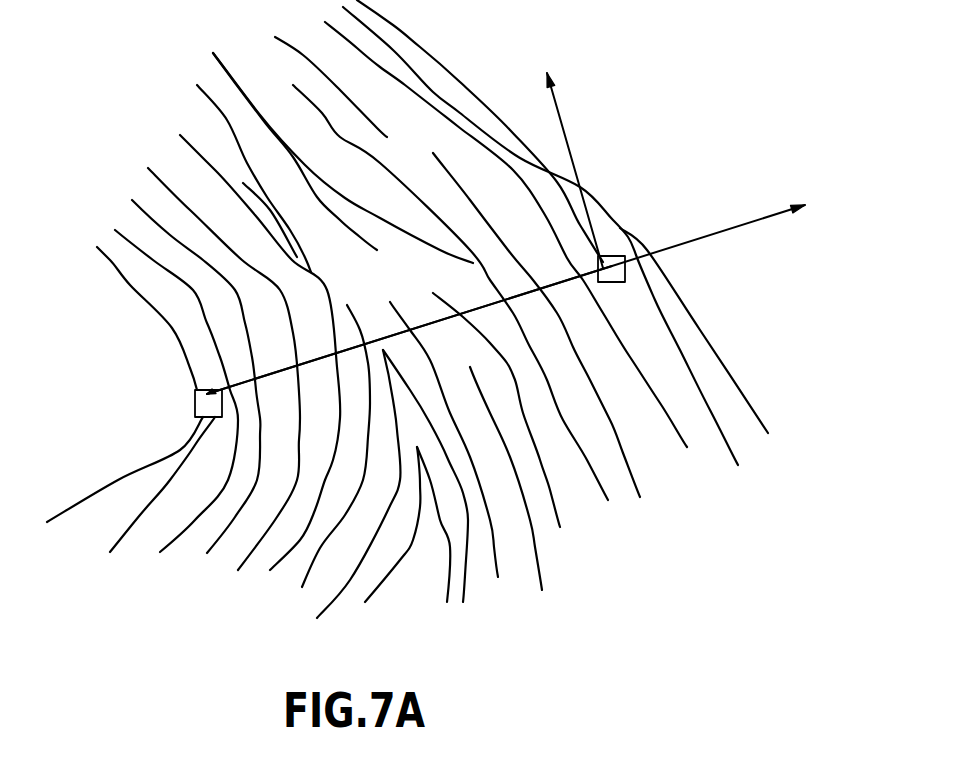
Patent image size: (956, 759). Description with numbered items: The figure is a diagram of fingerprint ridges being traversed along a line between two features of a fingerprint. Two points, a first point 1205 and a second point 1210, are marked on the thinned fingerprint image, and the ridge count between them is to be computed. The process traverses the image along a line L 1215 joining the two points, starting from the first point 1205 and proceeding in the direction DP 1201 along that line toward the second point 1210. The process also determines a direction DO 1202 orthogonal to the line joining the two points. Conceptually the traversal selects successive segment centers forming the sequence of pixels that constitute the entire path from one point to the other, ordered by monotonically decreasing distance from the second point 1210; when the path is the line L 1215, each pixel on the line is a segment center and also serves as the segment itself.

The direction DP 1201 is at (740, 222).
The direction DO 1202 is at (568, 142).
The point P1 1205 is at (200, 393).
The point P2 1210 is at (623, 283).
The line L 1215 is at (380, 340).